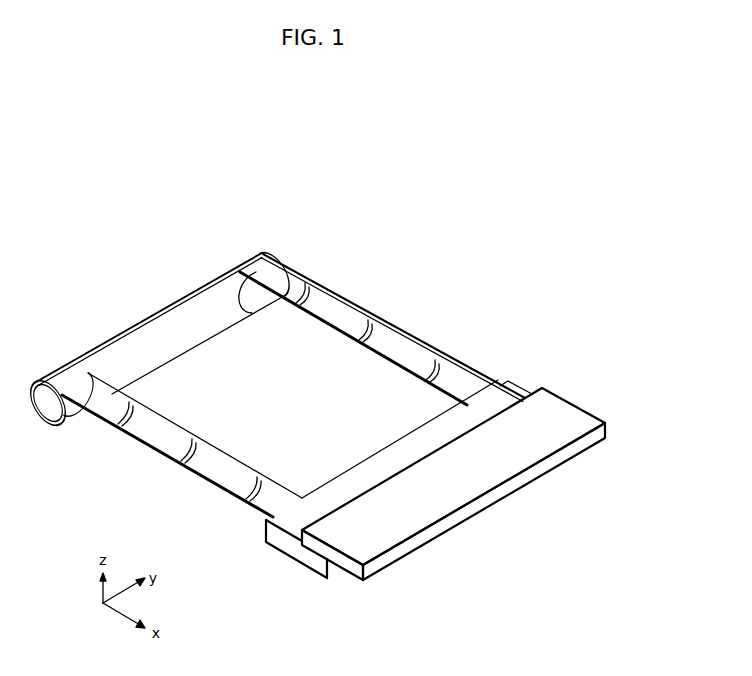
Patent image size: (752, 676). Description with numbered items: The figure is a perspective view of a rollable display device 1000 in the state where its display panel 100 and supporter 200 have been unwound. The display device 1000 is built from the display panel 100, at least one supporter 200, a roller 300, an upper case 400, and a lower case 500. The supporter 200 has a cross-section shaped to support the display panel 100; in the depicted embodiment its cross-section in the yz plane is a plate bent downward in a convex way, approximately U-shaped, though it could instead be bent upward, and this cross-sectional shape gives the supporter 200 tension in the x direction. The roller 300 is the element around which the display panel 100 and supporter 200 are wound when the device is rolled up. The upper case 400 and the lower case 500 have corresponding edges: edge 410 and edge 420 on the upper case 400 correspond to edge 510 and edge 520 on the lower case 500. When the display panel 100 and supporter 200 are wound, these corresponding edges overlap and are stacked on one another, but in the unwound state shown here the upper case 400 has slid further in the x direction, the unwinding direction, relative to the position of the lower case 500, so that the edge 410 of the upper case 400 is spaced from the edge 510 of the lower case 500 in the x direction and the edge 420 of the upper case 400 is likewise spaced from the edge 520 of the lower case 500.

The display device 1000 is at (497, 275).
The display panel 100 is at (375, 314).
The supporter 200 is at (123, 426).
The roller 300 is at (157, 328).
The upper case 400 is at (570, 407).
The edge of upper case 410 is at (469, 420).
The edge of upper case 420 is at (474, 520).
The lower case 500 is at (300, 554).
The edge of lower case 510 is at (411, 428).
The edge of lower case 520 is at (339, 576).